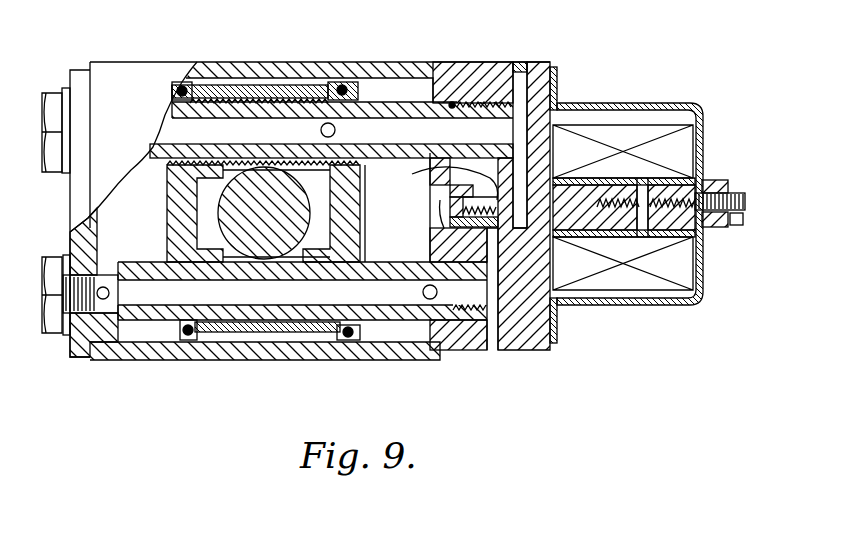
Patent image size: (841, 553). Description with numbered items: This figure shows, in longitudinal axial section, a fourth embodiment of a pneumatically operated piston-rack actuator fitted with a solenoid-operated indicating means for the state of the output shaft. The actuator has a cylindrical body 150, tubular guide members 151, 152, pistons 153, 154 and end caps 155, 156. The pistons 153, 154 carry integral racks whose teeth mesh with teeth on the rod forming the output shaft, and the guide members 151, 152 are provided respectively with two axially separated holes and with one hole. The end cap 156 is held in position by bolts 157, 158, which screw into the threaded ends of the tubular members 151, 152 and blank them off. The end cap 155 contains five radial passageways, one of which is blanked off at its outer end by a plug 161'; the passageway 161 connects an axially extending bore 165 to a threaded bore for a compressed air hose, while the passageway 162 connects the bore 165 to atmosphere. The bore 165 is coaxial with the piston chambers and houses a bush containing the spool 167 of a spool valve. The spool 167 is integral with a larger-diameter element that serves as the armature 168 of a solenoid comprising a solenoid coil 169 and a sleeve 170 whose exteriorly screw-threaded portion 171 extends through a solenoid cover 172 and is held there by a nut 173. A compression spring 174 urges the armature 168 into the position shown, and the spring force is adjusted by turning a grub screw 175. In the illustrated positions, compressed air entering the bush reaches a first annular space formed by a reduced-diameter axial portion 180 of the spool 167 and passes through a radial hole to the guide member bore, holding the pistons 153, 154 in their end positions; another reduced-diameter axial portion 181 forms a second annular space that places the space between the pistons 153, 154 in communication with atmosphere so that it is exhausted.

The cylindrical body 150 is at (250, 360).
The tubular guide member 151 is at (143, 322).
The tubular guide member 152 is at (204, 110).
The piston 153 is at (432, 226).
The piston 154 is at (178, 188).
The end cap 155 is at (470, 350).
The end cap 156 is at (70, 231).
The bolt 157 is at (51, 91).
The bolt 158 is at (58, 335).
The radial passageway 161 is at (538, 289).
The plug 161' is at (519, 129).
The radial passageway 162 is at (450, 192).
The axially extending bore 165 is at (448, 224).
The spool 167 is at (452, 205).
The armature 168 is at (588, 193).
The solenoid coil 169 is at (607, 290).
The sleeve 170 is at (673, 225).
The exteriorly screw-threaded portion 171 is at (743, 226).
The solenoid cover 172 is at (667, 103).
The nut 173 is at (713, 186).
The compression spring 174 is at (646, 230).
The grub screw 175 is at (735, 188).
The axial portion of reduced diameter 180 is at (436, 193).
The axial portion of reduced diameter 181 is at (623, 151).